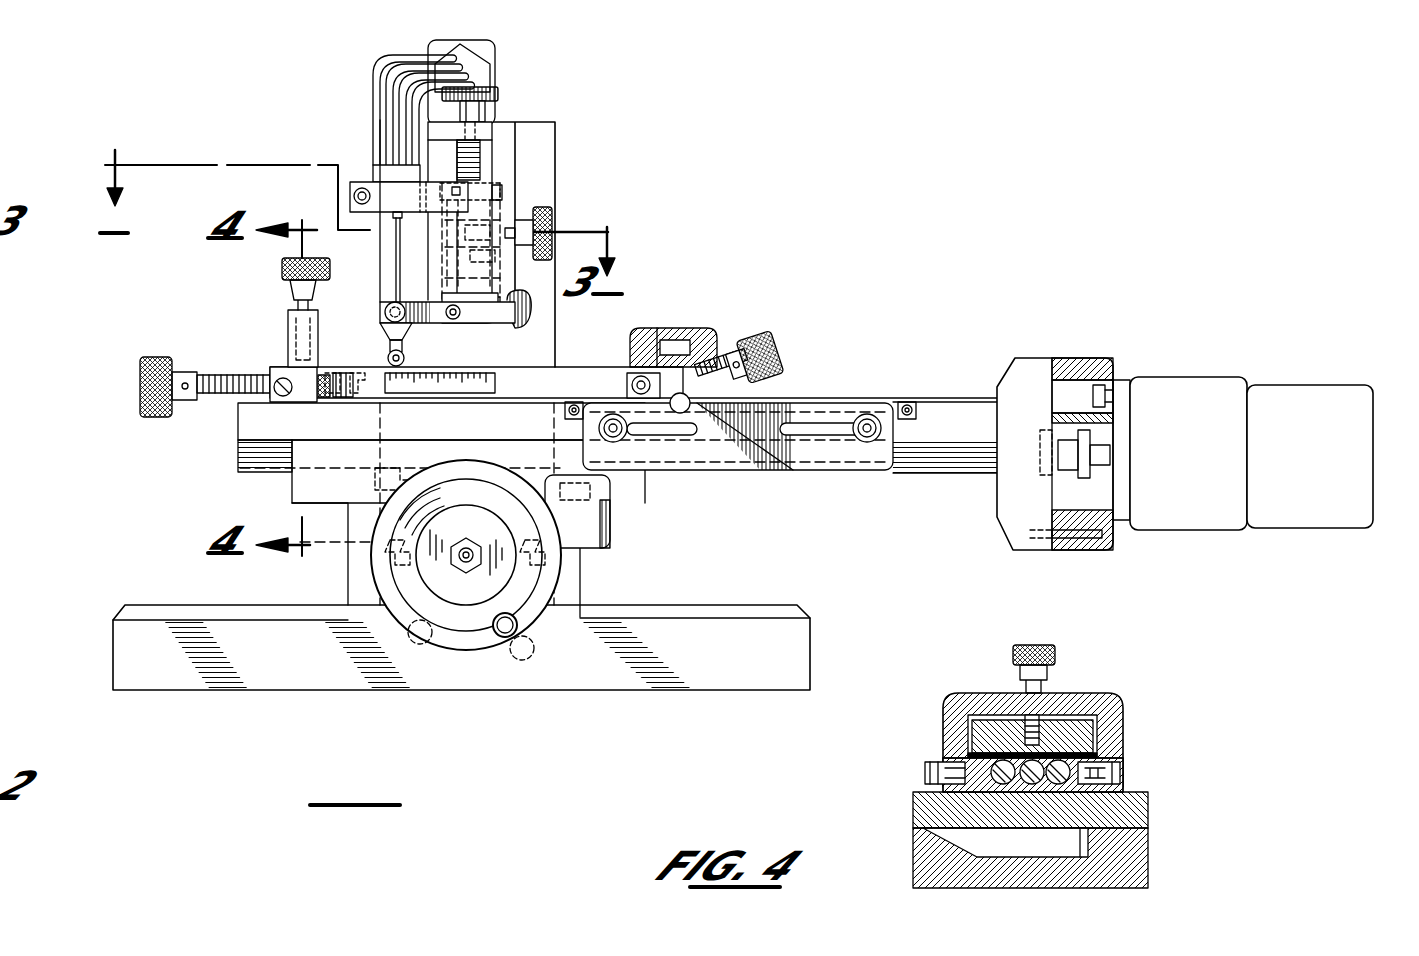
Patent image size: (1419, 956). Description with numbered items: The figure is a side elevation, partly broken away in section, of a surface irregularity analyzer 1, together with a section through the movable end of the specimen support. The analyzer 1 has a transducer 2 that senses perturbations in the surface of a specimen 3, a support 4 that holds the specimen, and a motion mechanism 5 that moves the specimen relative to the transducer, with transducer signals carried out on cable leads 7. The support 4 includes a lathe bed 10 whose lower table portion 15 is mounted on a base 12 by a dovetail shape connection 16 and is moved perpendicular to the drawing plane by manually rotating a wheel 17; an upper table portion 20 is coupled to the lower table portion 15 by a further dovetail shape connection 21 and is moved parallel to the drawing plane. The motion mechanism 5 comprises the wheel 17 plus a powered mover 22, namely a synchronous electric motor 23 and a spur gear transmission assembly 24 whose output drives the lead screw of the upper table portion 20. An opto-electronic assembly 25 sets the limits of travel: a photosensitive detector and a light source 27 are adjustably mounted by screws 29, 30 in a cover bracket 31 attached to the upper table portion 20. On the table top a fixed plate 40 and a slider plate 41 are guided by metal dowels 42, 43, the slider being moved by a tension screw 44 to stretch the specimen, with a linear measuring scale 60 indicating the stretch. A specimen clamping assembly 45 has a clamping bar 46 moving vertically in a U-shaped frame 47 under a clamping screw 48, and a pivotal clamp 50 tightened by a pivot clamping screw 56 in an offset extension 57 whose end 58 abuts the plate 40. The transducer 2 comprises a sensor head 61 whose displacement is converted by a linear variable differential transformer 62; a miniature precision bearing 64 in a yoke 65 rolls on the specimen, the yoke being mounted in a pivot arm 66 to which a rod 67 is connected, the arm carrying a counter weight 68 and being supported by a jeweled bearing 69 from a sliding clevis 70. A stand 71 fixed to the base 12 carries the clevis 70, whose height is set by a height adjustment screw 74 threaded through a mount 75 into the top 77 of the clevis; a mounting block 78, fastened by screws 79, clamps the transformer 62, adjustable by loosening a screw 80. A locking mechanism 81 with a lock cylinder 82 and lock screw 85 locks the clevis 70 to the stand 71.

In FIG. 2, the surface irregularity analyzer 1 is at (685, 268).
In FIG. 2, the transducer 2 is at (365, 157).
In FIG. 2, the specimen 3 is at (578, 368).
In FIG. 4, the specimen 3 is at (1100, 756).
In FIG. 2, the support 4 is at (360, 363).
In FIG. 2, the motion mechanism 5 is at (998, 360).
In FIG. 2, the cable leads 7 is at (358, 68).
In FIG. 2, the lathe bed 10 is at (262, 487).
In FIG. 2, the base 12 is at (145, 604).
In FIG. 2, the lower table portion 15 is at (347, 514).
In FIG. 4, the lower table portion 15 is at (1150, 846).
In FIG. 2, the dovetail shape connection 16 is at (395, 552).
In FIG. 2, the wheel 17 is at (560, 576).
In FIG. 2, the upper table portion 20 is at (240, 424).
In FIG. 4, the upper table portion 20 is at (1150, 810).
In FIG. 4, the dovetail shape connection 21 is at (1092, 858).
In FIG. 2, the powered mover 22 is at (1310, 378).
In FIG. 2, the synchronous electric motor 23 is at (1185, 378).
In FIG. 2, the transmission assembly 24 is at (1033, 358).
In FIG. 2, the opto-electronic assembly 25 is at (757, 478).
In FIG. 2, the light source 27 is at (633, 432).
In FIG. 2, the screw 29 is at (613, 413).
In FIG. 2, the screw 30 is at (870, 415).
In FIG. 2, the cover bracket 31 is at (713, 457).
In FIG. 2, the fixed plate 40 is at (515, 392).
In FIG. 2, the slider plate 41 is at (278, 368).
In FIG. 4, the slider plate 41 is at (1122, 788).
In FIG. 2, the metal dowel 42 is at (257, 377).
In FIG. 4, the metal dowel 42 is at (1003, 785).
In FIG. 4, the metal dowel 43 is at (1060, 785).
In FIG. 2, the tension screw 44 is at (157, 358).
In FIG. 2, the specimen clamping assembly 45 is at (258, 306).
In FIG. 4, the clamping bar 46 is at (1098, 732).
In FIG. 2, the U-shaped frame 47 is at (290, 335).
In FIG. 4, the U-shaped frame 47 is at (1075, 695).
In FIG. 2, the clamping screw 48 is at (282, 268).
In FIG. 4, the clamping screw 48 is at (1055, 652).
In FIG. 2, the pivotal clamp 50 is at (663, 325).
In FIG. 2, the pivot clamping screw 56 is at (778, 352).
In FIG. 2, the offset extension 57 is at (718, 357).
In FIG. 2, the end 58 is at (658, 393).
In FIG. 2, the linear measuring scale 60 is at (420, 395).
In FIG. 2, the sensor head 61 is at (380, 322).
In FIG. 2, the linear variable differential transformer 62 is at (375, 170).
In FIG. 2, the miniature precision bearing 64 is at (404, 358).
In FIG. 2, the yoke 65 is at (408, 335).
In FIG. 2, the pivot arm 66 is at (428, 292).
In FIG. 2, the rod 67 is at (395, 258).
In FIG. 2, the counter weight 68 is at (520, 322).
In FIG. 2, the jeweled bearing 69 is at (453, 320).
In FIG. 2, the sliding clevis 70 is at (500, 292).
In FIG. 2, the stand 71 is at (556, 130).
In FIG. 2, the height adjustment screw 74 is at (500, 92).
In FIG. 2, the mount 75 is at (493, 128).
In FIG. 2, the top 77 is at (485, 182).
In FIG. 2, the mounting block 78 is at (351, 190).
In FIG. 2, the screws 79 is at (500, 192).
In FIG. 2, the screw 80 is at (353, 200).
In FIG. 2, the locking mechanism 81 is at (530, 212).
In FIG. 2, the lock cylinder 82 is at (471, 250).
In FIG. 2, the lock screw 85 is at (553, 223).